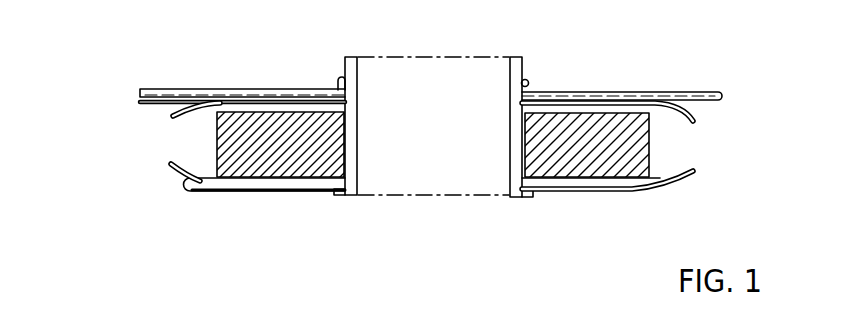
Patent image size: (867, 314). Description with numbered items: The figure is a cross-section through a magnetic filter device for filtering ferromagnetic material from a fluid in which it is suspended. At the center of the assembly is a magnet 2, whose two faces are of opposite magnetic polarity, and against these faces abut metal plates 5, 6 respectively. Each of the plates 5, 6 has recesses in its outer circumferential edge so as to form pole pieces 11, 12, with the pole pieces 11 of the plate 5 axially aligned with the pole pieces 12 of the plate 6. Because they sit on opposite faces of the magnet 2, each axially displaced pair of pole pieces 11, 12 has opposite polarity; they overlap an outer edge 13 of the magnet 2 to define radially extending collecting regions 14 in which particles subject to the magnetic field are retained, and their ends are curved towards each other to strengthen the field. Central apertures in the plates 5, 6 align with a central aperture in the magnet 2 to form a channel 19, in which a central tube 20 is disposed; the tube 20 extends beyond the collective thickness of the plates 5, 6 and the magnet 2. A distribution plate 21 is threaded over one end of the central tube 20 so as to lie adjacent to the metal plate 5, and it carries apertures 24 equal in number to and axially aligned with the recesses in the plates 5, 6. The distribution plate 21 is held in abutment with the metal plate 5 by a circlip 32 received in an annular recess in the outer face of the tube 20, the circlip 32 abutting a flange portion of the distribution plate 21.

The magnet 2 is at (582, 162).
The metal plate 5 is at (248, 102).
The metal plate 6 is at (282, 182).
The pole piece 11 is at (699, 121).
The pole piece 12 is at (690, 178).
The outer edge 13 is at (216, 143).
The collecting region 14 is at (173, 142).
The channel 19 is at (512, 198).
The central tube 20 is at (341, 76).
The distribution plate 21 is at (143, 89).
The apertures 24 is at (673, 92).
The circlip 32 is at (529, 82).